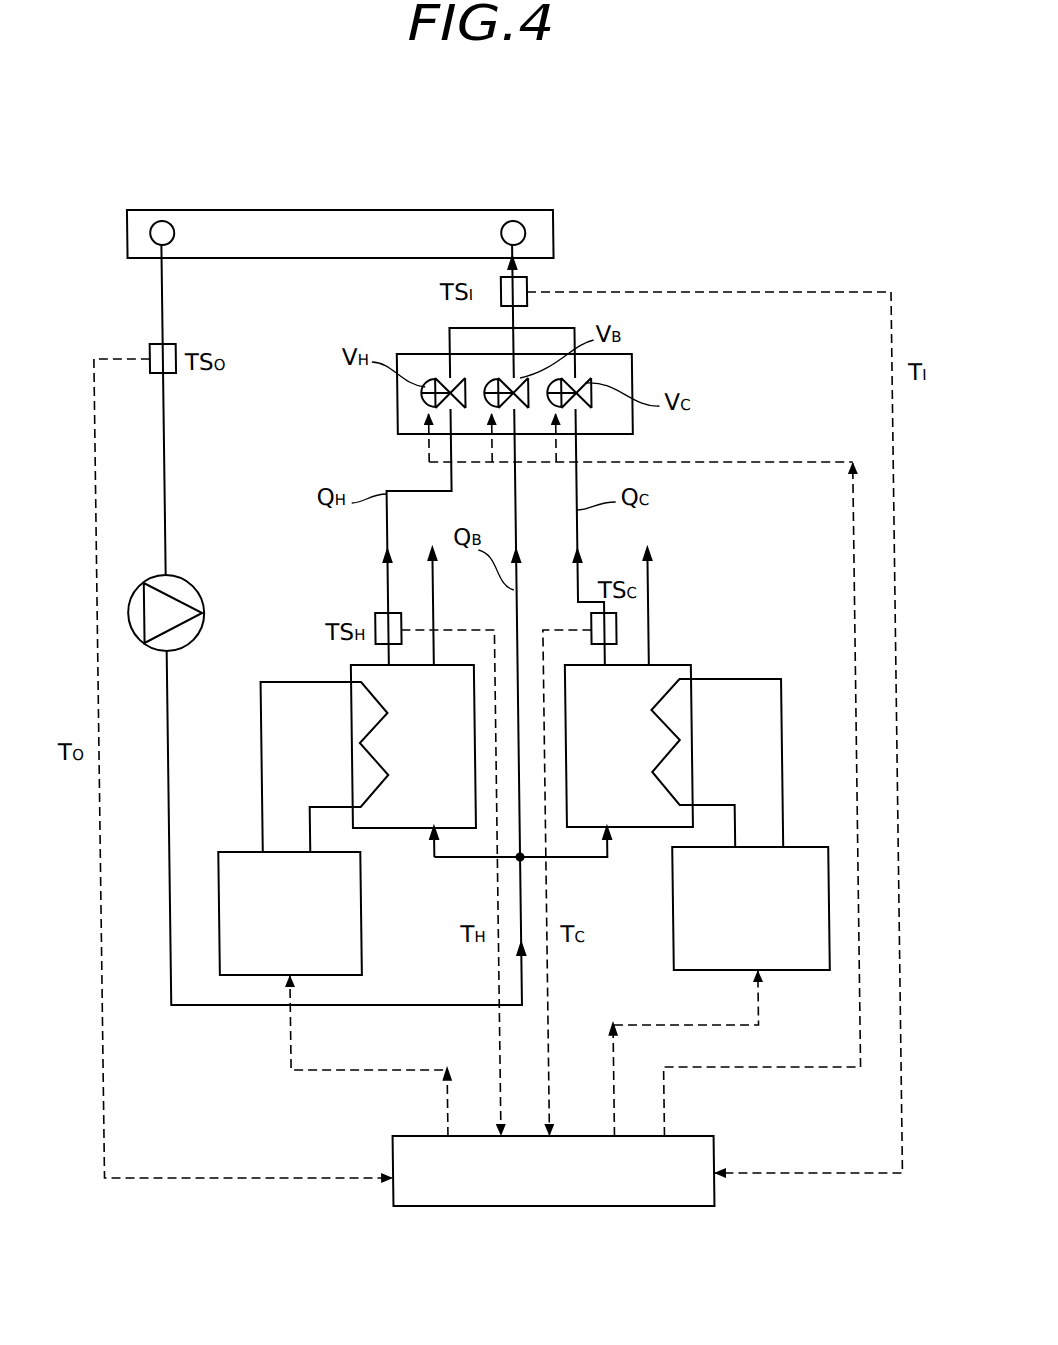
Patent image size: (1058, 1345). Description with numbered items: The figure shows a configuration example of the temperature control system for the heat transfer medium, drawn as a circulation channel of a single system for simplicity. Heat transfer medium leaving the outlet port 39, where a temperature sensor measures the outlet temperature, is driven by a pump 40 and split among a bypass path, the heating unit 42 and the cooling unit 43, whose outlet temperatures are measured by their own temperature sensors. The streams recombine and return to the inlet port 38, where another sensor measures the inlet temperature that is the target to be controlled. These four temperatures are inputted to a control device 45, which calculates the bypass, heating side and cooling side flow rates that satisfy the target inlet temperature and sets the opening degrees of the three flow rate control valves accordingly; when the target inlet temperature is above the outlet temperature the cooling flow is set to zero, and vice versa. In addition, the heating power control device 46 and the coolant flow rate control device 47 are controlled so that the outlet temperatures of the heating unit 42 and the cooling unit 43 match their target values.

The inlet port 38 is at (520, 219).
The outlet port 39 is at (167, 219).
The pump 40 is at (180, 575).
The heating unit 42 is at (387, 832).
The cooling unit 43 is at (645, 832).
The control device 45 is at (620, 1206).
The heating power control device 46 is at (234, 851).
The coolant flow rate control device 47 is at (809, 846).